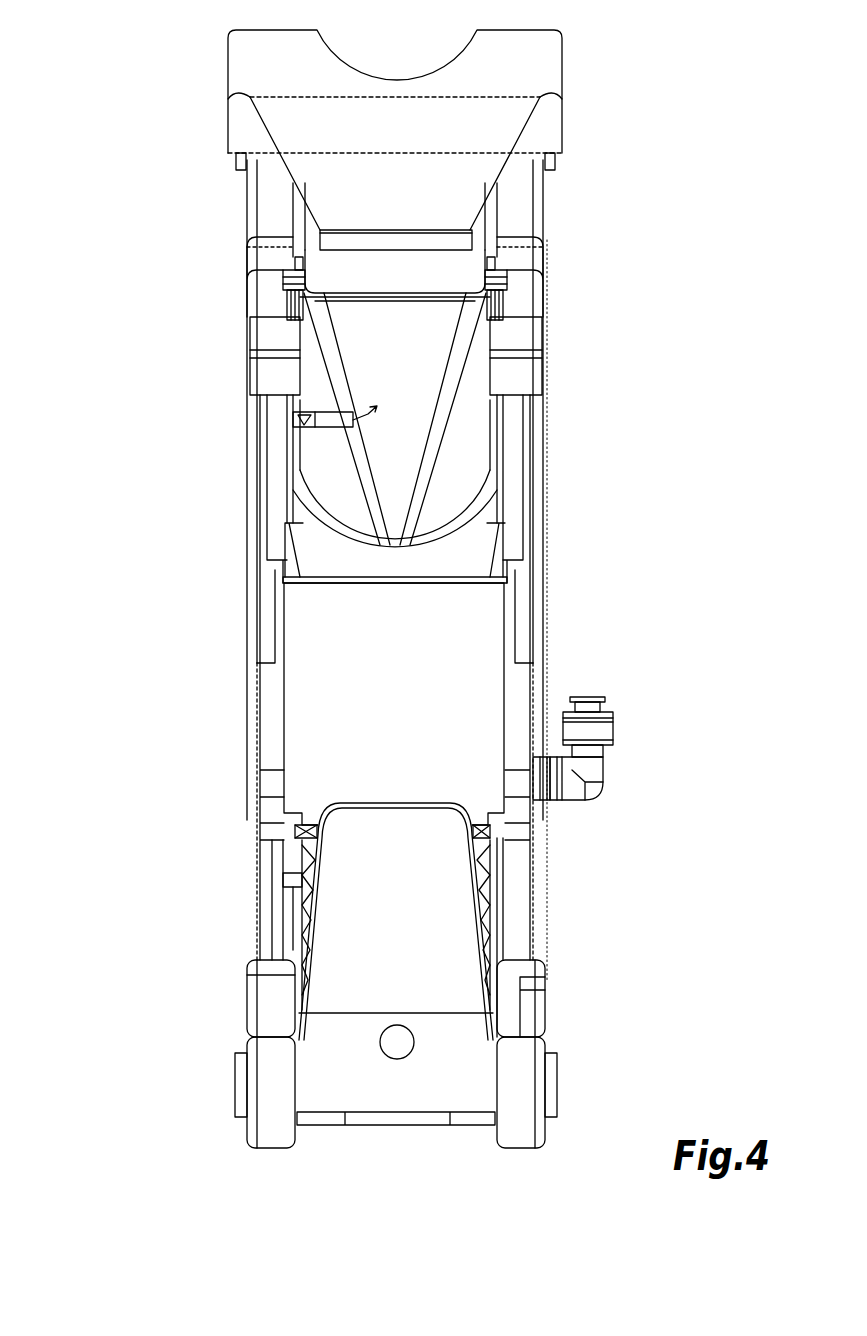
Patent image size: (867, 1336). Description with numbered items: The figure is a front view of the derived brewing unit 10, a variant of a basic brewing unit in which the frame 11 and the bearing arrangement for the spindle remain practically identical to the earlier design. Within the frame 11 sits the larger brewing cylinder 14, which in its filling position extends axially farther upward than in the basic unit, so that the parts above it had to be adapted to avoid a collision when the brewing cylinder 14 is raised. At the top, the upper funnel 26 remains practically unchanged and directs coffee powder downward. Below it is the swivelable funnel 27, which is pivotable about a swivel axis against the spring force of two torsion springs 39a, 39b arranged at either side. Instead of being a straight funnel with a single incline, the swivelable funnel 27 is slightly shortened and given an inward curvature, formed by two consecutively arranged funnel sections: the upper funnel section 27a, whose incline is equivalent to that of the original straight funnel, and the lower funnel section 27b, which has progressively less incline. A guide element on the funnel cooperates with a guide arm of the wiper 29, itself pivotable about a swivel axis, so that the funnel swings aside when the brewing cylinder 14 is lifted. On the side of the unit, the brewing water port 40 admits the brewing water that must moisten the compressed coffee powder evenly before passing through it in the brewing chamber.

The brewing unit 10 is at (193, 853).
The frame 11 is at (522, 930).
The brewing cylinder 14 is at (410, 724).
The upper funnel 26 is at (430, 160).
The swivelable funnel 27 is at (307, 459).
The upper funnel section 27a is at (425, 383).
The lower funnel section 27b is at (445, 485).
The wiper 29 is at (317, 557).
The torsion spring 39a is at (288, 307).
The torsion spring 39b is at (502, 305).
The brewing water port 40 is at (593, 772).